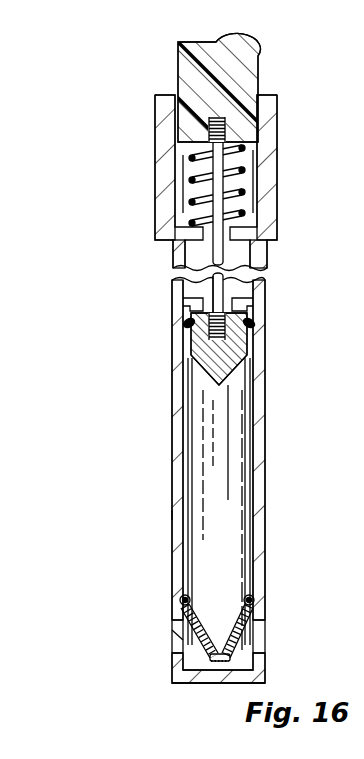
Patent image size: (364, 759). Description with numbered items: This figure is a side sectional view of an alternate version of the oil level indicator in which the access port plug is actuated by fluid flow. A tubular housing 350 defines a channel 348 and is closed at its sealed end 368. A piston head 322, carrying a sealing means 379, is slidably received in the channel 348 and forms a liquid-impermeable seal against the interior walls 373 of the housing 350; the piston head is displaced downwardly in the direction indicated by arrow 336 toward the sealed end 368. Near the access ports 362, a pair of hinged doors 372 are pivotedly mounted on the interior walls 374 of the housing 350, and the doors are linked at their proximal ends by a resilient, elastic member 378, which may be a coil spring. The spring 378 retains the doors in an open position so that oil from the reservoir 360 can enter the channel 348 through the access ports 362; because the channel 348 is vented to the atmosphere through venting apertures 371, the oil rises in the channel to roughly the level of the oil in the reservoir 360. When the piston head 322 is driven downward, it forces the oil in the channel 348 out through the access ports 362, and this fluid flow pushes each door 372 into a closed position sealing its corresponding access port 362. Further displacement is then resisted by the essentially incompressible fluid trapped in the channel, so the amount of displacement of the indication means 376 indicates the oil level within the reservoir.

The arrow 336 is at (93, 233).
The indication means 376 is at (176, 47).
The sealing means 379 is at (184, 324).
The piston head 322 is at (187, 374).
The venting apertures 371 is at (187, 388).
The interior walls 373 is at (247, 437).
The channel 348 is at (215, 462).
The tubular housing 350 is at (170, 496).
The interior walls 374 is at (178, 514).
The reservoir 360 is at (144, 554).
The hinged doors 372 is at (194, 581).
The access ports 362 is at (180, 623).
The resilient elastic member 378 is at (214, 660).
The sealed end 368 is at (178, 683).